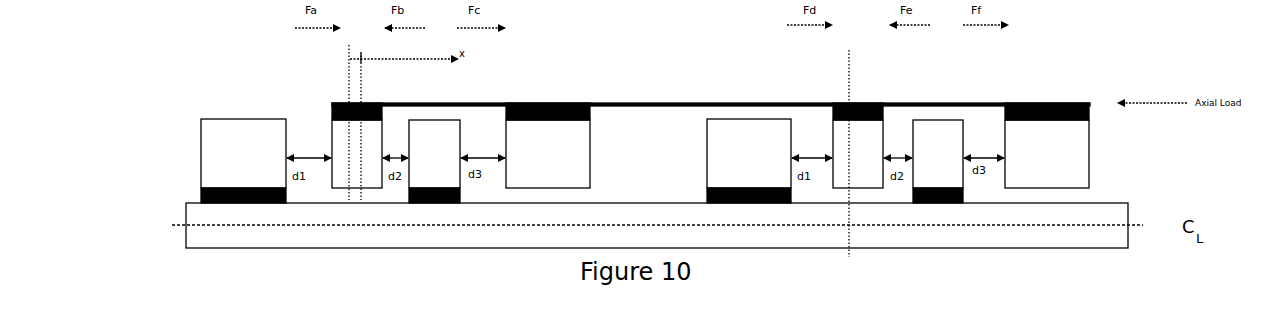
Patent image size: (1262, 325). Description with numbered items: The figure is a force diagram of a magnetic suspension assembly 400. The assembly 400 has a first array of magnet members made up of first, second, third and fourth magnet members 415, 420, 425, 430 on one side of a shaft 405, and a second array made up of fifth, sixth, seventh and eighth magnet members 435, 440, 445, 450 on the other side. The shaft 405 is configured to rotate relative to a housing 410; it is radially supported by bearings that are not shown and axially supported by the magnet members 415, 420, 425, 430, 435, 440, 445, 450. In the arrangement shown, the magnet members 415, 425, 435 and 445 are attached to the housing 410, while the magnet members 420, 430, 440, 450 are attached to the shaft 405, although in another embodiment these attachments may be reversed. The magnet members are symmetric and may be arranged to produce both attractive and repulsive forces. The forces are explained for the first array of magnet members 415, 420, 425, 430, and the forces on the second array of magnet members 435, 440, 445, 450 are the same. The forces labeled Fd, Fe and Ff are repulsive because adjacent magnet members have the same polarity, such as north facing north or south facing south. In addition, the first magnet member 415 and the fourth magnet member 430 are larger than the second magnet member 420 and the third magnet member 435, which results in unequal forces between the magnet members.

The magnetic suspension assembly 400 is at (1210, 19).
The shaft 405 is at (1078, 245).
The housing 410 is at (660, 103).
The first magnet member 415 is at (1057, 139).
The second magnet member 420 is at (945, 132).
The third magnet member 425 is at (868, 130).
The fourth magnet member 430 is at (758, 138).
The fifth magnet member 435 is at (545, 138).
The sixth magnet member 440 is at (438, 133).
The seventh magnet member 445 is at (347, 132).
The eighth magnet member 450 is at (247, 138).